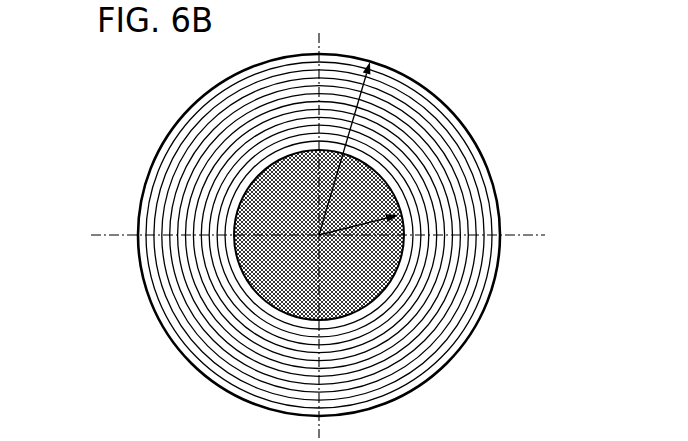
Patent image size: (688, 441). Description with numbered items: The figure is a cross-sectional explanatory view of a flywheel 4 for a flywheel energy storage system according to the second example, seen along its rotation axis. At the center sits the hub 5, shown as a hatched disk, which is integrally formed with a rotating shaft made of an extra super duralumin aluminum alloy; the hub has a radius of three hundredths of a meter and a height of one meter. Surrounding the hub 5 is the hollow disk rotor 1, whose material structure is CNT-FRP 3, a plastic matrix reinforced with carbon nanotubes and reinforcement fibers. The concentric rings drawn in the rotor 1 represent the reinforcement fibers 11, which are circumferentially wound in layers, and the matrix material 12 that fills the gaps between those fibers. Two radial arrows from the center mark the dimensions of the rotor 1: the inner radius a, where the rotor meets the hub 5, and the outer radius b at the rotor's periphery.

The rotor 1 is at (145, 178).
The CNT-FRP 3 is at (385, 235).
The flywheel 4 is at (128, 100).
The hub 5 is at (269, 187).
The reinforcement fibers 11 is at (447, 160).
The matrix material 12 is at (467, 200).
The inner radius a is at (363, 228).
The outer radius b is at (313, 153).